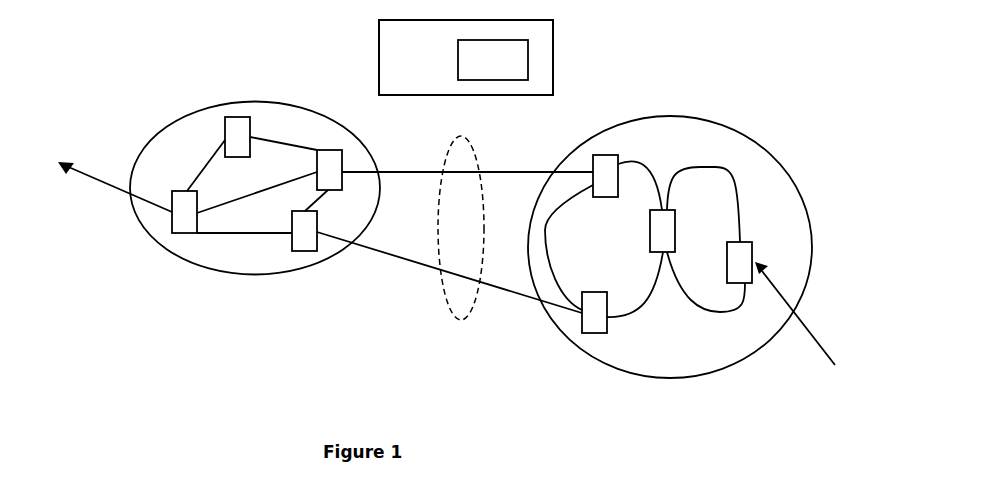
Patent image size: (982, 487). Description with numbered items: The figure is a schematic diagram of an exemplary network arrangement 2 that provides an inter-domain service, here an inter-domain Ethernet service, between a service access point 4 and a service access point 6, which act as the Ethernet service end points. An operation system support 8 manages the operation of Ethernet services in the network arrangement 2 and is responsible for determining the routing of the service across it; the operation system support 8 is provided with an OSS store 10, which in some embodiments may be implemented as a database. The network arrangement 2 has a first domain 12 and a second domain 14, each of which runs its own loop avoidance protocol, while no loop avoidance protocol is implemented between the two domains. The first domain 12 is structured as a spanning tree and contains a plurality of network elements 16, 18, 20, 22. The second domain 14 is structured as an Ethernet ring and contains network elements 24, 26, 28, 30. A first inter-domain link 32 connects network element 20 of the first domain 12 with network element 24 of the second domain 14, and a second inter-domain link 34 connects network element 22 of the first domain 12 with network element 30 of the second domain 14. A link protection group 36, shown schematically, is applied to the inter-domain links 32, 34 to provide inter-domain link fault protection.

The network arrangement 2 is at (48, 401).
The service access point 4 is at (104, 170).
The service access point 6 is at (800, 325).
The operation system support 8 is at (379, 37).
The OSS store 10 is at (525, 58).
The first domain 12 is at (217, 273).
The second domain 14 is at (652, 378).
The network element 16 is at (172, 218).
The network element 18 is at (235, 117).
The network element 20 is at (329, 150).
The network element 22 is at (303, 251).
The network element 24 is at (607, 155).
The network element 26 is at (745, 242).
The network element 28 is at (675, 240).
The network element 30 is at (590, 333).
The first inter-domain link 32 is at (431, 177).
The second inter-domain link 34 is at (390, 257).
The link protection group 36 is at (447, 292).